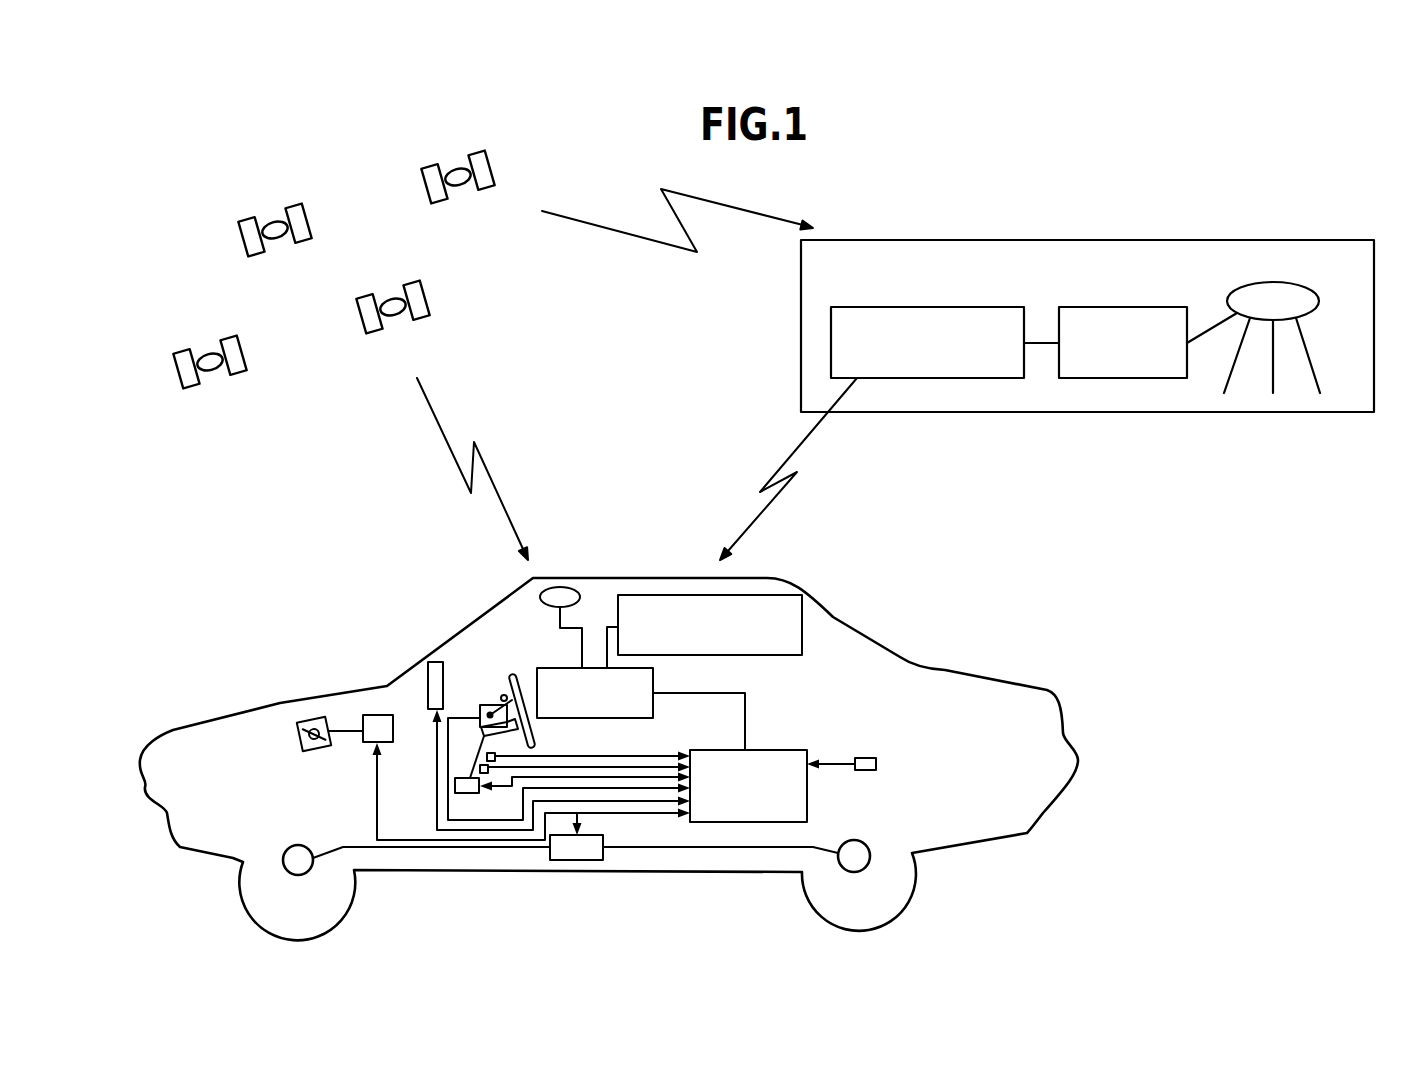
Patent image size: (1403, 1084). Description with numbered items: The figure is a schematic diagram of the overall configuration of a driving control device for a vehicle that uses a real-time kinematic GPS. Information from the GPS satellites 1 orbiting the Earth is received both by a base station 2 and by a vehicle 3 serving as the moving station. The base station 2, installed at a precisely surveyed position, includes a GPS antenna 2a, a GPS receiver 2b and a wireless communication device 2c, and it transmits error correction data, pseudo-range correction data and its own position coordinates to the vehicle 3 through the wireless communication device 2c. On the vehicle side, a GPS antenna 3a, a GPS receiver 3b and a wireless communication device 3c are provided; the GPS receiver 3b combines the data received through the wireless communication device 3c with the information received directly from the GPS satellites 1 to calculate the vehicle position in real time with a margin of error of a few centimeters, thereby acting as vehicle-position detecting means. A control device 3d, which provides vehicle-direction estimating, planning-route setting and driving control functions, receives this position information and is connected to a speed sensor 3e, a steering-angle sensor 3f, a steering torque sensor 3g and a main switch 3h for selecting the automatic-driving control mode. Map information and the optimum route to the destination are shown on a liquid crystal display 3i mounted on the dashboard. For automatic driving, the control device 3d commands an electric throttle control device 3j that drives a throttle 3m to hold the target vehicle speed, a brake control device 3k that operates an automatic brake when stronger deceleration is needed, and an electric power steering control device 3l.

The GPS satellites 1 is at (502, 168).
The base station 2 is at (1190, 239).
The GPS antenna 2a is at (1303, 285).
The GPS receiver 2b is at (1123, 306).
The wireless communication device 2c is at (937, 306).
The vehicle 3 is at (945, 669).
The GPS antenna 3a is at (562, 578).
The GPS receiver 3b is at (654, 684).
The wireless communication device 3c is at (765, 596).
The control device 3d is at (803, 749).
The speed sensor 3e is at (877, 759).
The steering-angle sensor 3f is at (497, 750).
The steering torque sensor 3g is at (478, 769).
The main switch 3h is at (488, 704).
The liquid crystal display 3i is at (433, 661).
The electric throttle control device 3j is at (378, 715).
The brake control device 3k is at (573, 861).
The electric power steering control device 3l is at (465, 794).
The throttle 3m is at (310, 723).